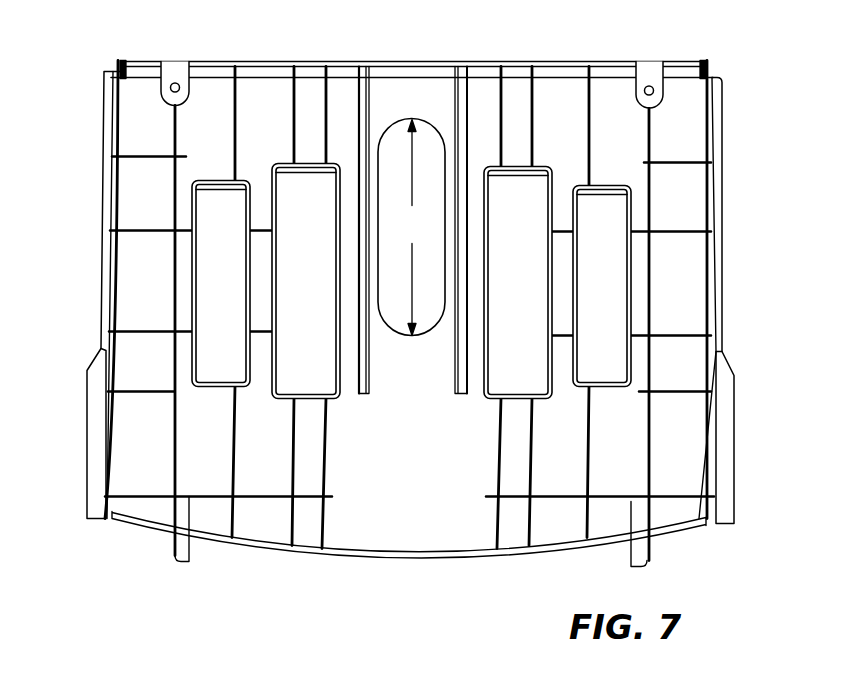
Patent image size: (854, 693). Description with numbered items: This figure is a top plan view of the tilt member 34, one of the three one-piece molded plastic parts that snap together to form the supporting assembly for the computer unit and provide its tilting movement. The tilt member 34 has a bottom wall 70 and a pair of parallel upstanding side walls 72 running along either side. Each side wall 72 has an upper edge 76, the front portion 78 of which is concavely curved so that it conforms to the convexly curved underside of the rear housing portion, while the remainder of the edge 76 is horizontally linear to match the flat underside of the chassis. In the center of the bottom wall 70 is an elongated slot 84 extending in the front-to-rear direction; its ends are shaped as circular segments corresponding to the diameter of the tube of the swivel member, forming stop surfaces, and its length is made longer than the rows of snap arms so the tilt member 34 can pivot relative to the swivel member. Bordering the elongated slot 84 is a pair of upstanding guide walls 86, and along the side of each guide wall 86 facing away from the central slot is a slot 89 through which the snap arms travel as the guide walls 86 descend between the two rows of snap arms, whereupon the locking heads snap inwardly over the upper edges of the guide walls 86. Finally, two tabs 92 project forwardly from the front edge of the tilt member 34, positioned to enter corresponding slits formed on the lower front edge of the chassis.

The tilt member 34 is at (736, 260).
The bottom wall 70 is at (433, 537).
The side walls 72 is at (108, 193).
The upper edge 76 is at (718, 325).
The front portion 78 is at (727, 425).
The elongated slot 84 is at (395, 337).
The guide walls 86 is at (372, 103).
The slot 89 is at (366, 125).
The tabs 92 is at (180, 557).